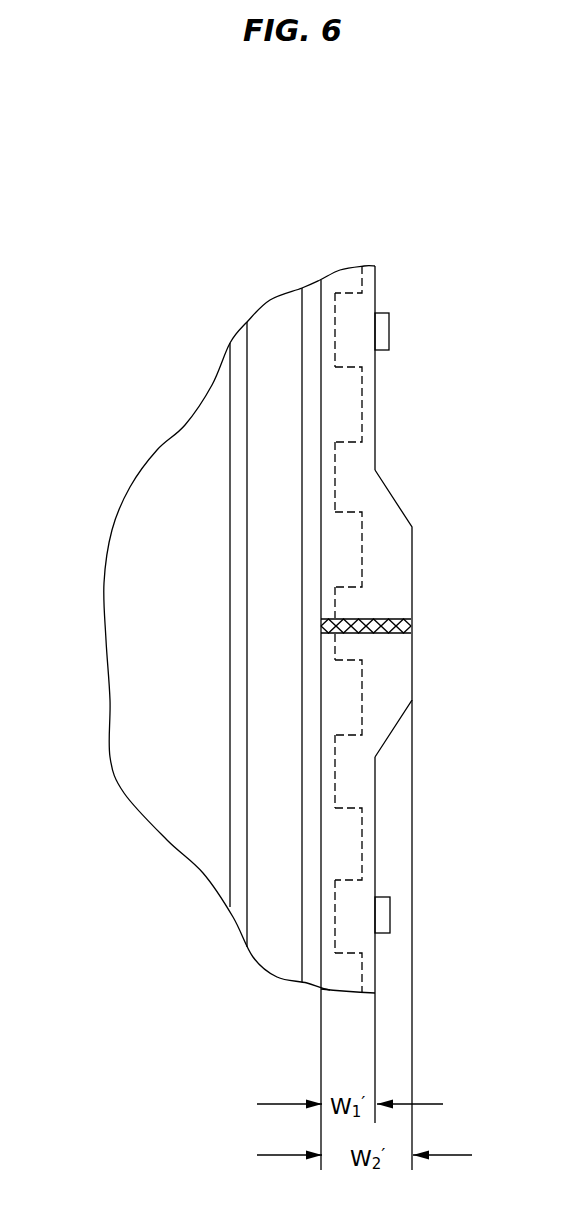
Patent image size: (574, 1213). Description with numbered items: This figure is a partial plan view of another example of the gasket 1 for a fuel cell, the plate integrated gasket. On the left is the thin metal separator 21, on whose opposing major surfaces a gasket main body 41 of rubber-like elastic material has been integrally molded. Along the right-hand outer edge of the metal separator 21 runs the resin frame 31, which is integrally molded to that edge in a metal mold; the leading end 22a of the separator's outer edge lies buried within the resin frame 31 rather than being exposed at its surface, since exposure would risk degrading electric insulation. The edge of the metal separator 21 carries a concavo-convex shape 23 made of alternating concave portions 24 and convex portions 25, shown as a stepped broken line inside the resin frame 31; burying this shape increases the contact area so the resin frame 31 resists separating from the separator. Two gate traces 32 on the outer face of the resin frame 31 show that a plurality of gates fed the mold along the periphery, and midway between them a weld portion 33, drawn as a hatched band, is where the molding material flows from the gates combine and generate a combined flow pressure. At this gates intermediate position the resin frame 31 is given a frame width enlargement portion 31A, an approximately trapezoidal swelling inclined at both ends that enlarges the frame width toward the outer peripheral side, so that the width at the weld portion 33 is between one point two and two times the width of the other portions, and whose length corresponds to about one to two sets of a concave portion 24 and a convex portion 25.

The gasket for a fuel cell 1 is at (138, 328).
The metal separator 21 is at (150, 488).
The gasket main body 41 is at (273, 312).
The leading end of the outer edge portion 22a is at (352, 973).
The resin frame 31 is at (345, 278).
The frame width enlargement portion 31A is at (392, 665).
The concavo-convex shape 23 is at (374, 527).
The concave portion 24 is at (340, 332).
The convex portion 25 is at (350, 403).
The gate trace 32 is at (383, 330).
The weld portion 33 is at (363, 620).